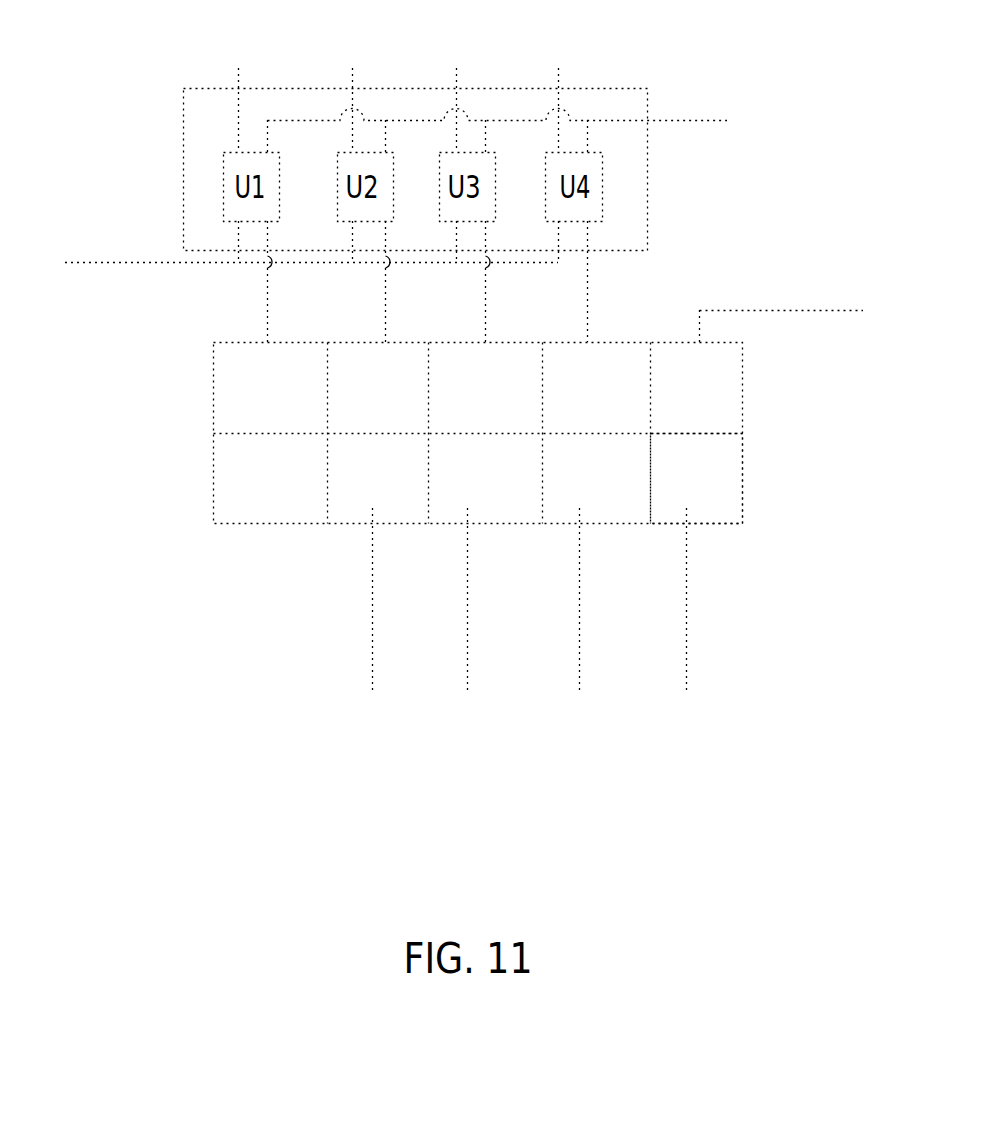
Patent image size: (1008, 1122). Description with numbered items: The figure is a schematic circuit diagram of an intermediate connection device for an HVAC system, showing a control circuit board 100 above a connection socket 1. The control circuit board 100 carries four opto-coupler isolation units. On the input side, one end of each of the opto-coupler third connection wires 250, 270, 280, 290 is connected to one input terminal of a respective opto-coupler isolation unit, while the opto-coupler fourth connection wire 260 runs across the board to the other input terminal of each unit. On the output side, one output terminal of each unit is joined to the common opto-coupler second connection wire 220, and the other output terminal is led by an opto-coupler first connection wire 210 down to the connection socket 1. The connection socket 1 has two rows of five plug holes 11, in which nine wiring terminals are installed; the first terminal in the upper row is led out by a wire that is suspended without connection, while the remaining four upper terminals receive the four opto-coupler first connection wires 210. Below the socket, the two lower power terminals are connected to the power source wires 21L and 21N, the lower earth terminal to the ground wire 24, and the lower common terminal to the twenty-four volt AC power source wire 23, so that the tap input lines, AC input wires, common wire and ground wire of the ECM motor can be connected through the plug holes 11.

The connection socket 1 is at (742, 480).
The plug holes 11 is at (723, 503).
The power source wire 21L is at (372, 654).
The power source wire 21N is at (467, 663).
The 24 V AC power source wire 23 is at (686, 673).
The ground wire 24 is at (579, 668).
The control circuit board 100 is at (200, 123).
The opto-coupler first connection wire 210 is at (485, 305).
The opto-coupler second connection wire 220 is at (100, 262).
The opto-coupler third connection wire 250 is at (236, 76).
The opto-coupler fourth connection wire 260 is at (587, 137).
The opto-coupler third connection wire 270 is at (350, 70).
The opto-coupler third connection wire 280 is at (454, 70).
The opto-coupler third connection wire 290 is at (556, 70).